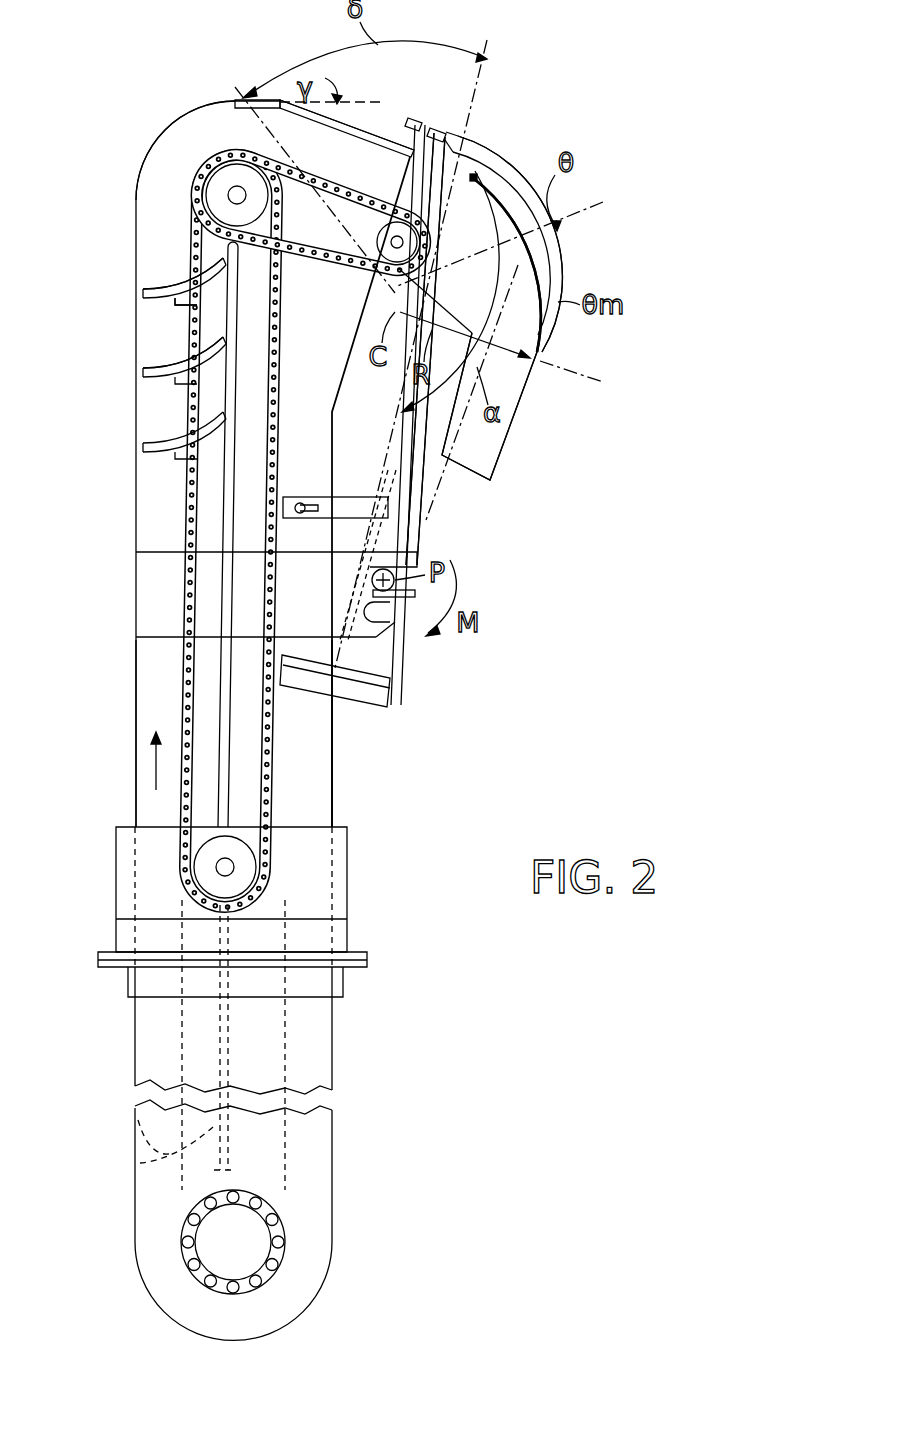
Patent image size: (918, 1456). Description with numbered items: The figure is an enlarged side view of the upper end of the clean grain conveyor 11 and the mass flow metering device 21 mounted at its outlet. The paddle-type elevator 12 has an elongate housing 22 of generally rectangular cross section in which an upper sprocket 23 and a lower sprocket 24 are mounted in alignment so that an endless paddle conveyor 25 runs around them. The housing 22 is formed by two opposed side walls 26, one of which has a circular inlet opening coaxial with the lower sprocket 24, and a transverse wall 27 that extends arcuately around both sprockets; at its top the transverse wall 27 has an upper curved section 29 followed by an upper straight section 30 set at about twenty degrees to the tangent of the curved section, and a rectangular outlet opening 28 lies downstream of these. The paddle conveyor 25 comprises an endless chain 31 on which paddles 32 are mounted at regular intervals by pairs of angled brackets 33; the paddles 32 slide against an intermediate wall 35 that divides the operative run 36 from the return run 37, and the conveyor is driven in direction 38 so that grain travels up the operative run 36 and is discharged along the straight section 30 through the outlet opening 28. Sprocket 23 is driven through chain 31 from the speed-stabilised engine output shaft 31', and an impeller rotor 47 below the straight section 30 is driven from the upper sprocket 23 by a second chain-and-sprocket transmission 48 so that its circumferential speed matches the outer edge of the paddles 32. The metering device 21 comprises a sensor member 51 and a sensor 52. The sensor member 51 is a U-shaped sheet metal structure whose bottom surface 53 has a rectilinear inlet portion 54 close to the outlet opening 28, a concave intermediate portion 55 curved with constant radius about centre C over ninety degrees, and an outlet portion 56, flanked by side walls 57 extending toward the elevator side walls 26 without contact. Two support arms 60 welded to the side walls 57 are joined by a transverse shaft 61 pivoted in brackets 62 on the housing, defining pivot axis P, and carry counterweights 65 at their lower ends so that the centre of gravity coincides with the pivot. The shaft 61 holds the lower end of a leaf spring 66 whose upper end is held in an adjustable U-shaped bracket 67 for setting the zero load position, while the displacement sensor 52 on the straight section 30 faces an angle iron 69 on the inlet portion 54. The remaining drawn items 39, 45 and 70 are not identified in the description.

The clean grain conveyor 11 is at (132, 198).
The paddle-type elevator 12 is at (158, 415).
The mass flow metering device 21 is at (525, 141).
The elongate housing 22 is at (150, 312).
The upper sprocket 23 is at (222, 165).
The lower sprocket 24 is at (222, 1244).
The endless paddle conveyor 25 is at (130, 372).
The side walls 26 is at (141, 696).
The transverse wall 27 is at (136, 774).
The outlet opening 28 is at (402, 198).
The upper curved section 29 is at (167, 128).
The upper straight section 30 is at (313, 148).
The endless chain 31 is at (177, 531).
The output shaft 31' is at (147, 867).
The paddles 32 is at (140, 1125).
The angled brackets 33 is at (182, 303).
The intermediate wall 35 is at (217, 652).
The operative run 36 is at (182, 1058).
The return run 37 is at (289, 746).
The drive direction 38 is at (153, 757).
The chain strand 39 is at (190, 522).
The deflecting plate 45 is at (485, 470).
The impeller rotor 47 is at (368, 273).
The second chain-and-sprocket transmission 48 is at (327, 256).
The sensor member 51 is at (569, 457).
The sensor 52 is at (417, 128).
The bottom surface 53 is at (529, 331).
The inlet portion 54 is at (458, 138).
The intermediate portion 55 is at (546, 262).
The outlet portion 56 is at (500, 452).
The side walls 57 is at (460, 305).
The support arms 60 is at (407, 492).
The transverse shaft 61 is at (371, 582).
The brackets 62 is at (413, 560).
The counterweights 65 is at (388, 692).
The leaf spring 66 is at (352, 542).
The U-shaped bracket 67 is at (326, 497).
The angle iron 69 is at (443, 130).
The reference line 70 is at (514, 235).